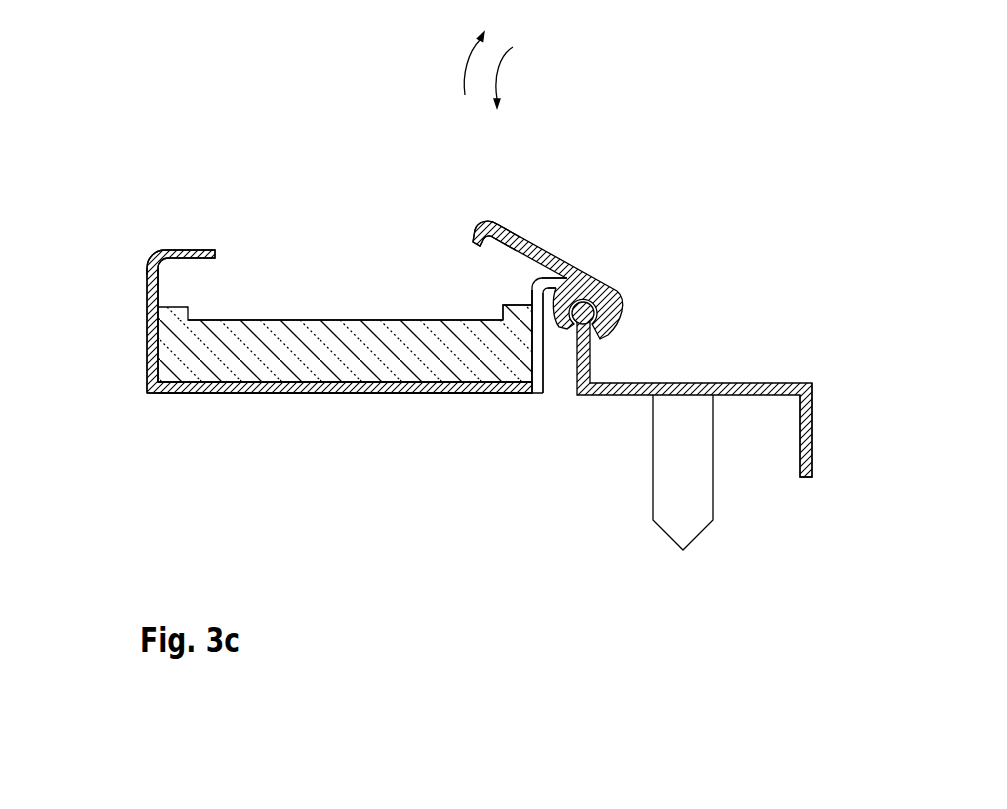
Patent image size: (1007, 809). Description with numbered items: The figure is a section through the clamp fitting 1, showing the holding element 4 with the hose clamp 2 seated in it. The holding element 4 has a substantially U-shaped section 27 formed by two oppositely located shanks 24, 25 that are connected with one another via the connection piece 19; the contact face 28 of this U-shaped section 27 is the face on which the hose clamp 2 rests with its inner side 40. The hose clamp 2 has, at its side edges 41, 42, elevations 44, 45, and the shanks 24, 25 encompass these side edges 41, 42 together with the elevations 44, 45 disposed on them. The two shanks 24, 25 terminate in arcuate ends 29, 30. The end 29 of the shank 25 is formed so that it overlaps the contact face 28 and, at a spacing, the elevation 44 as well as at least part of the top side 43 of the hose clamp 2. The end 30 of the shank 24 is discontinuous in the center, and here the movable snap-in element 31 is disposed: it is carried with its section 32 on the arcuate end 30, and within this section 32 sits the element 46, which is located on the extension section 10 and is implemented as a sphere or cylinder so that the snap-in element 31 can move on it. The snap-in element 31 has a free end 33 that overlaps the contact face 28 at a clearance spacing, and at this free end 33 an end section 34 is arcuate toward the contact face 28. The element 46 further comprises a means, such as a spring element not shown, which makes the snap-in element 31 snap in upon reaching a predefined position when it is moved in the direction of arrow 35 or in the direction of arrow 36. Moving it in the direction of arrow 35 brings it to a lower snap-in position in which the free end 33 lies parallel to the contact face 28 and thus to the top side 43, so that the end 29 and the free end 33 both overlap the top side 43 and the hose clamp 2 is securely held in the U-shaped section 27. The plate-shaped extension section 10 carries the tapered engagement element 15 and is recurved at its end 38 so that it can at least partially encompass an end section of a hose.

The clamp fitting 1 is at (207, 137).
The hose clamp 2 is at (345, 287).
The holding element 4 is at (561, 291).
The extension section 10 is at (732, 419).
The engagement element 15 is at (707, 493).
The connection piece 19 is at (455, 396).
The shank 24 is at (568, 347).
The shank 25 is at (150, 367).
The U-shaped section 27 is at (403, 405).
The contact face 28 is at (275, 396).
The end 29 is at (194, 250).
The end 30 is at (540, 282).
The snap-in element 31 is at (544, 230).
The section 32 is at (605, 292).
The free end 33 is at (492, 222).
The end section 34 is at (480, 226).
The arrow 35 is at (503, 62).
The arrow 36 is at (460, 68).
The end 38 is at (812, 432).
The inner side 40 is at (330, 396).
The side edge 41 is at (148, 337).
The side edge 42 is at (546, 343).
The top side 43 is at (320, 318).
The elevation 44 is at (147, 292).
The elevation 45 is at (497, 318).
The element 46 is at (606, 310).